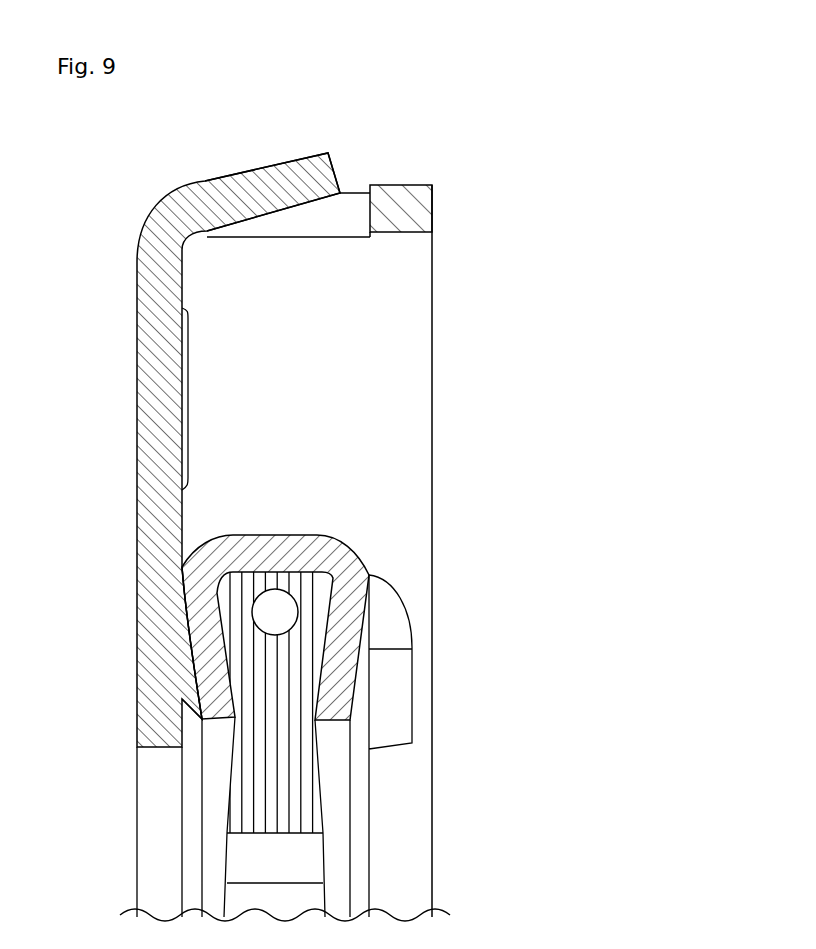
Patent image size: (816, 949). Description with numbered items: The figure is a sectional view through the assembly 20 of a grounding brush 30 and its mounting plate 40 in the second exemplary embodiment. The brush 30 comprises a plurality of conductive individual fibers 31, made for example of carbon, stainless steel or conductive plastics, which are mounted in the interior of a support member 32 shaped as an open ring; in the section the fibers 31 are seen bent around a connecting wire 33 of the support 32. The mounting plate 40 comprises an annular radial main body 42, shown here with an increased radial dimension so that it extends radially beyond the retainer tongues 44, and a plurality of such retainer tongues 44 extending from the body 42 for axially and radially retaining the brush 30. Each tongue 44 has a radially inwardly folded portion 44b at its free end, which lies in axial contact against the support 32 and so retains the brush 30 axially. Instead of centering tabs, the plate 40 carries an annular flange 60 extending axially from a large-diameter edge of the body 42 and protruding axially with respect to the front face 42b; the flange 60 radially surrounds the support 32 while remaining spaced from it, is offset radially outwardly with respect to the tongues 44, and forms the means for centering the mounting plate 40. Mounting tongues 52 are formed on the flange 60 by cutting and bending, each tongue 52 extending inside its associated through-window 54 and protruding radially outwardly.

The assembly 20 is at (447, 152).
The brush 30 is at (340, 767).
The conductive individual fibers 31 is at (260, 815).
The support member 32 is at (188, 547).
The connecting wire 33 is at (282, 612).
The mounting plate 40 is at (440, 191).
The main body 42 is at (162, 385).
The front face 42b is at (200, 693).
The retainer tongue 44 is at (400, 670).
The folded portion 44b is at (398, 712).
The mounting tongue 52 is at (278, 185).
The window 54 is at (342, 218).
The annular flange 60 is at (395, 210).